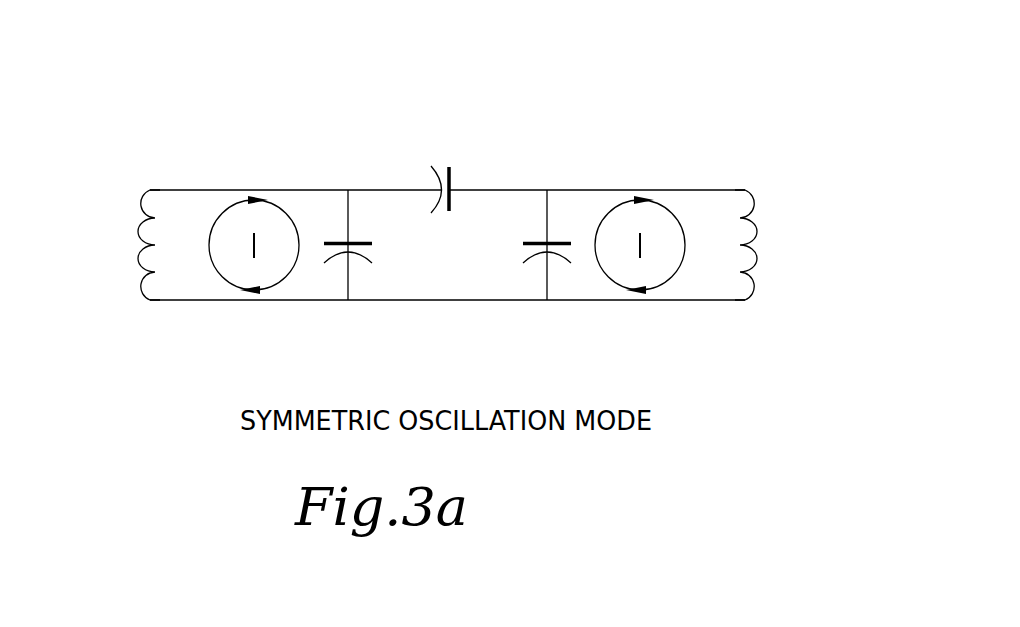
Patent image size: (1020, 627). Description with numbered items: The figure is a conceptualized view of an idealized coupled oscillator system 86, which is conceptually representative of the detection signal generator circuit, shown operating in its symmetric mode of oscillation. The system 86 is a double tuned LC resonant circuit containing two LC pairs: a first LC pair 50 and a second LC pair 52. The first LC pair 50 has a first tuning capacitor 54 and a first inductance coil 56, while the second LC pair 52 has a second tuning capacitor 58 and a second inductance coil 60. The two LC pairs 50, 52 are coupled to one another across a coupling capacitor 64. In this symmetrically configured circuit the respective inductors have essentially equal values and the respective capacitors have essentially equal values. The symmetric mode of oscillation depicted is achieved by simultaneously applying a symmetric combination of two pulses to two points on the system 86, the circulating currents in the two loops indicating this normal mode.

The idealized coupled oscillator system 86 is at (688, 86).
The first LC pair 50 is at (636, 162).
The second LC pair 52 is at (260, 165).
The coupling capacitor 64 is at (451, 192).
The second inductance coil 60 is at (140, 194).
The first inductance coil 56 is at (752, 193).
The second tuning capacitor 58 is at (350, 245).
The first tuning capacitor 54 is at (523, 244).